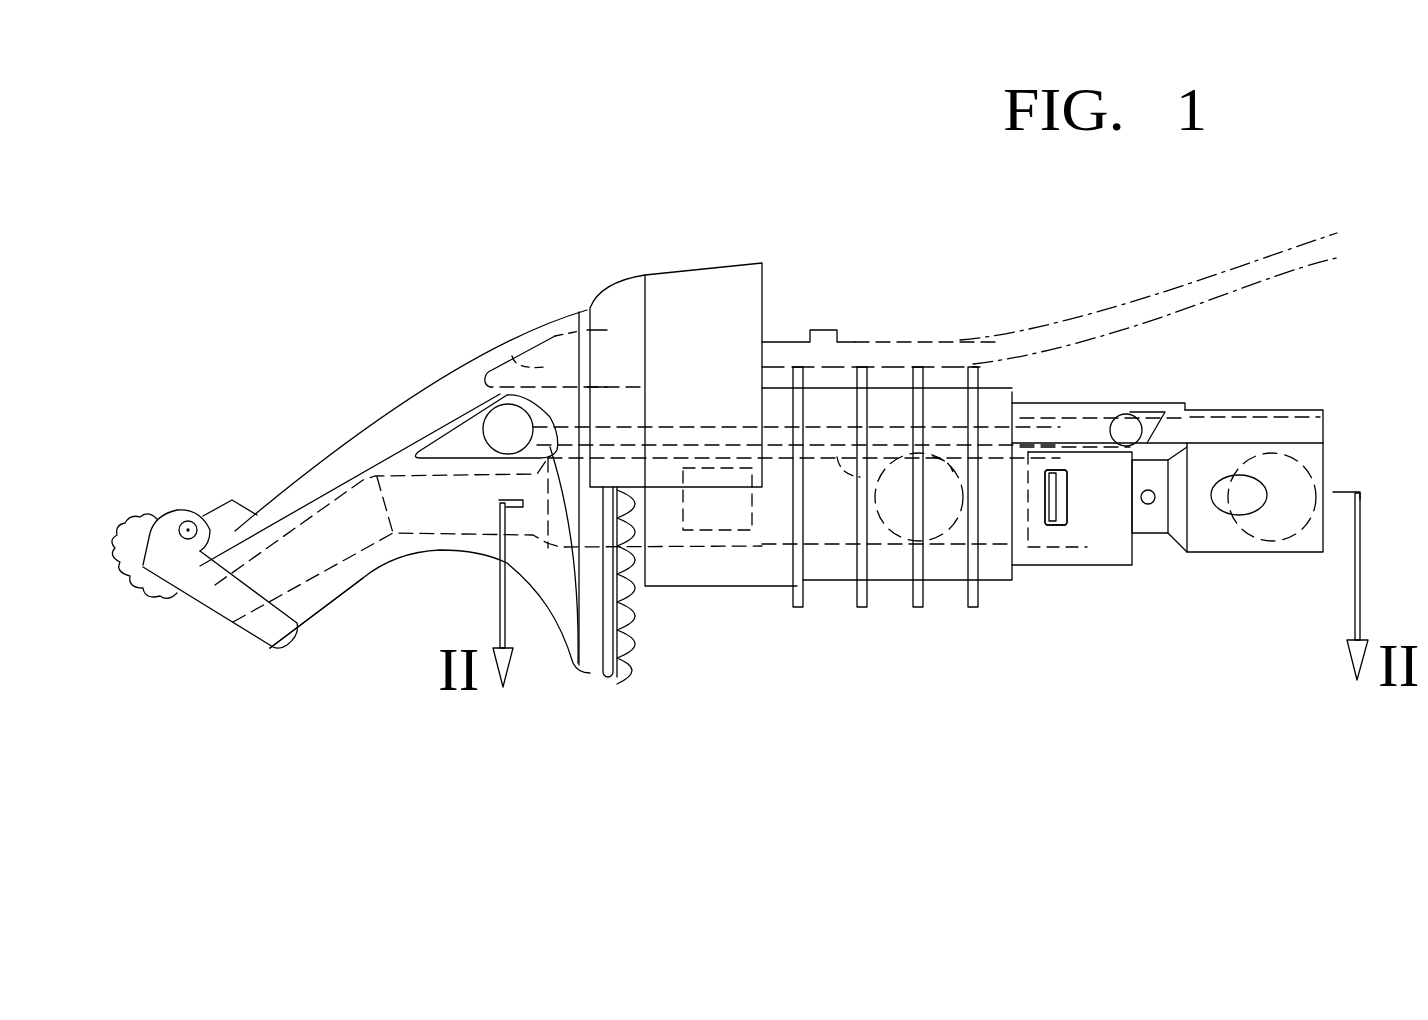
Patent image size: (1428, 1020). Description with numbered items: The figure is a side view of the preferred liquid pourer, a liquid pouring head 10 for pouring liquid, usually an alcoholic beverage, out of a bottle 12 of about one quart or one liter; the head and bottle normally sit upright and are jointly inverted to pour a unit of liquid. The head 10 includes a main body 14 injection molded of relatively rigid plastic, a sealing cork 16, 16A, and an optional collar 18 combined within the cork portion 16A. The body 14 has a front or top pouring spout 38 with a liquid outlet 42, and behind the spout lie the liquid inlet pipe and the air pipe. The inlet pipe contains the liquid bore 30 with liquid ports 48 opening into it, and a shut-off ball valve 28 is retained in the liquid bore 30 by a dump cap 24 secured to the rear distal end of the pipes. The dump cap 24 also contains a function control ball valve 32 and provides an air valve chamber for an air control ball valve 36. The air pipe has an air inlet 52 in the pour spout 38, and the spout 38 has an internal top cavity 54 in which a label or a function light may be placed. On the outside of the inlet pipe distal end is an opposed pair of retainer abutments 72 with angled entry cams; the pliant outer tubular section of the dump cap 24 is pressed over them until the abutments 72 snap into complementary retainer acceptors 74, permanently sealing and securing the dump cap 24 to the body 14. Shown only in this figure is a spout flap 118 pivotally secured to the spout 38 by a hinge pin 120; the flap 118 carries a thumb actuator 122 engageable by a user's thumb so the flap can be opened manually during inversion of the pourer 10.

The liquid pouring head 10 is at (703, 222).
The bottle 12 is at (1037, 328).
The main body 14 is at (367, 360).
The sealing cork 16 is at (697, 588).
The sealing cork portion (optional collar) 16A is at (832, 386).
The collar 18 is at (719, 266).
The dump cap 24 is at (1157, 535).
The shut-off ball valve 28 is at (942, 463).
The liquid bore 30 is at (878, 478).
The function control ball valve 32 is at (1250, 462).
The air control ball valve 36 is at (1102, 403).
The pouring spout 38 is at (367, 580).
The liquid outlet 42 is at (257, 630).
The liquid ports 48 is at (732, 468).
The air inlet 52 is at (548, 458).
The internal top cavity 54 is at (547, 360).
The retainer abutments 72 is at (1052, 527).
The retainer acceptors 74 is at (1056, 497).
The spout flap 118 is at (208, 613).
The hinge pin 120 is at (192, 522).
The thumb actuator 122 is at (113, 547).